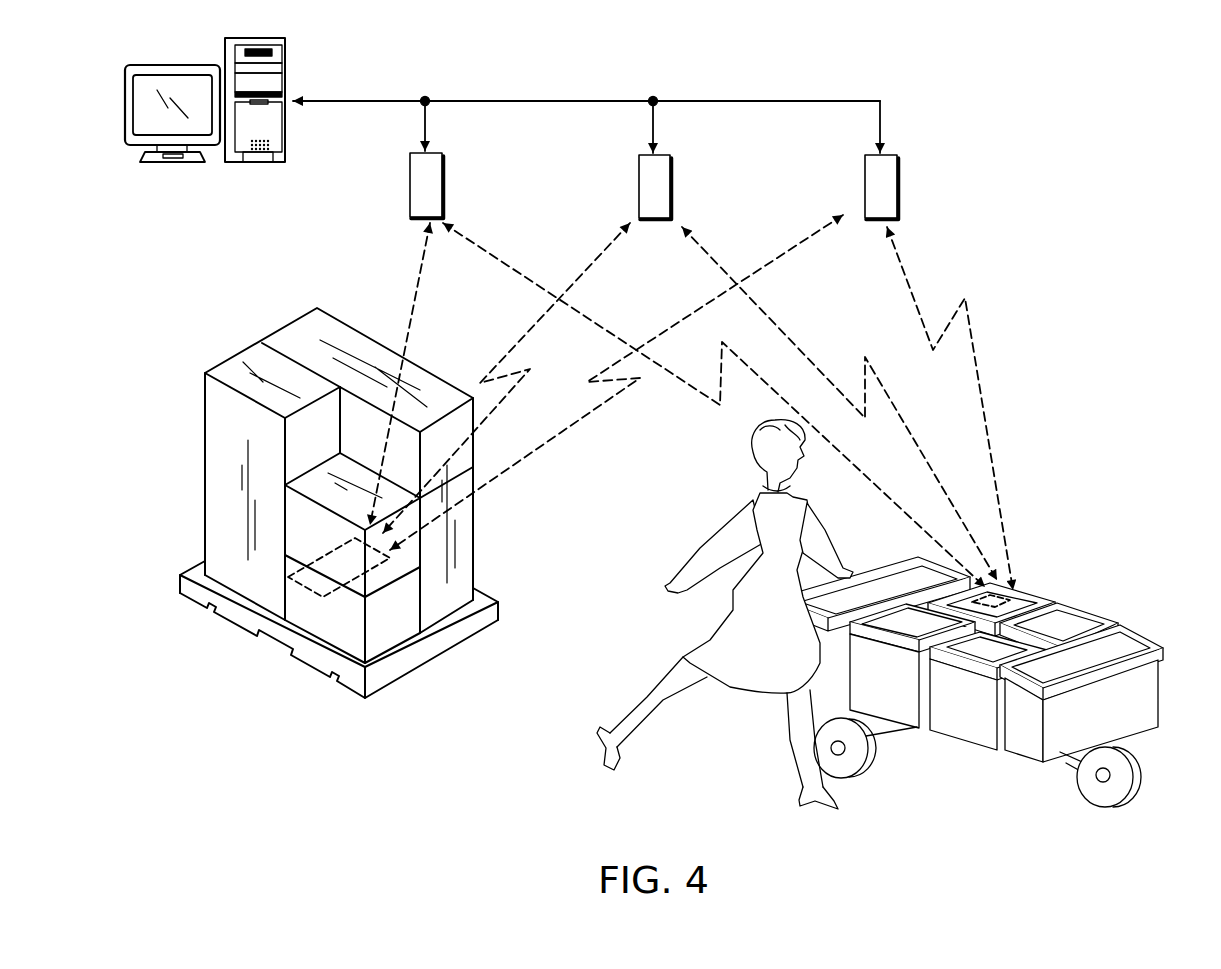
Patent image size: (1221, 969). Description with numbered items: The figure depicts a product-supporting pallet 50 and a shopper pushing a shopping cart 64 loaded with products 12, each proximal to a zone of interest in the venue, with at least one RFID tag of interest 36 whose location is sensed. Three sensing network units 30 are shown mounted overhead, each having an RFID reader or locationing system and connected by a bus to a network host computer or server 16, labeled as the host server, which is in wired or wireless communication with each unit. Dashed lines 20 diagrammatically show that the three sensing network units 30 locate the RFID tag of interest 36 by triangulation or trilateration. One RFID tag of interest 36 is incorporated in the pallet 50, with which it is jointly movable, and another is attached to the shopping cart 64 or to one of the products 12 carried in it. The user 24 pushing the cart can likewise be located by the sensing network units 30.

The network host computer or server 16 is at (125, 104).
The sensing network unit 30 is at (410, 186).
The dashed lines 20 is at (404, 292).
The RFID tag of interest 36 is at (1063, 553).
The pallet 50 is at (432, 663).
The product 12 is at (1068, 627).
The user 24 is at (662, 676).
The shopping cart 64 is at (970, 682).